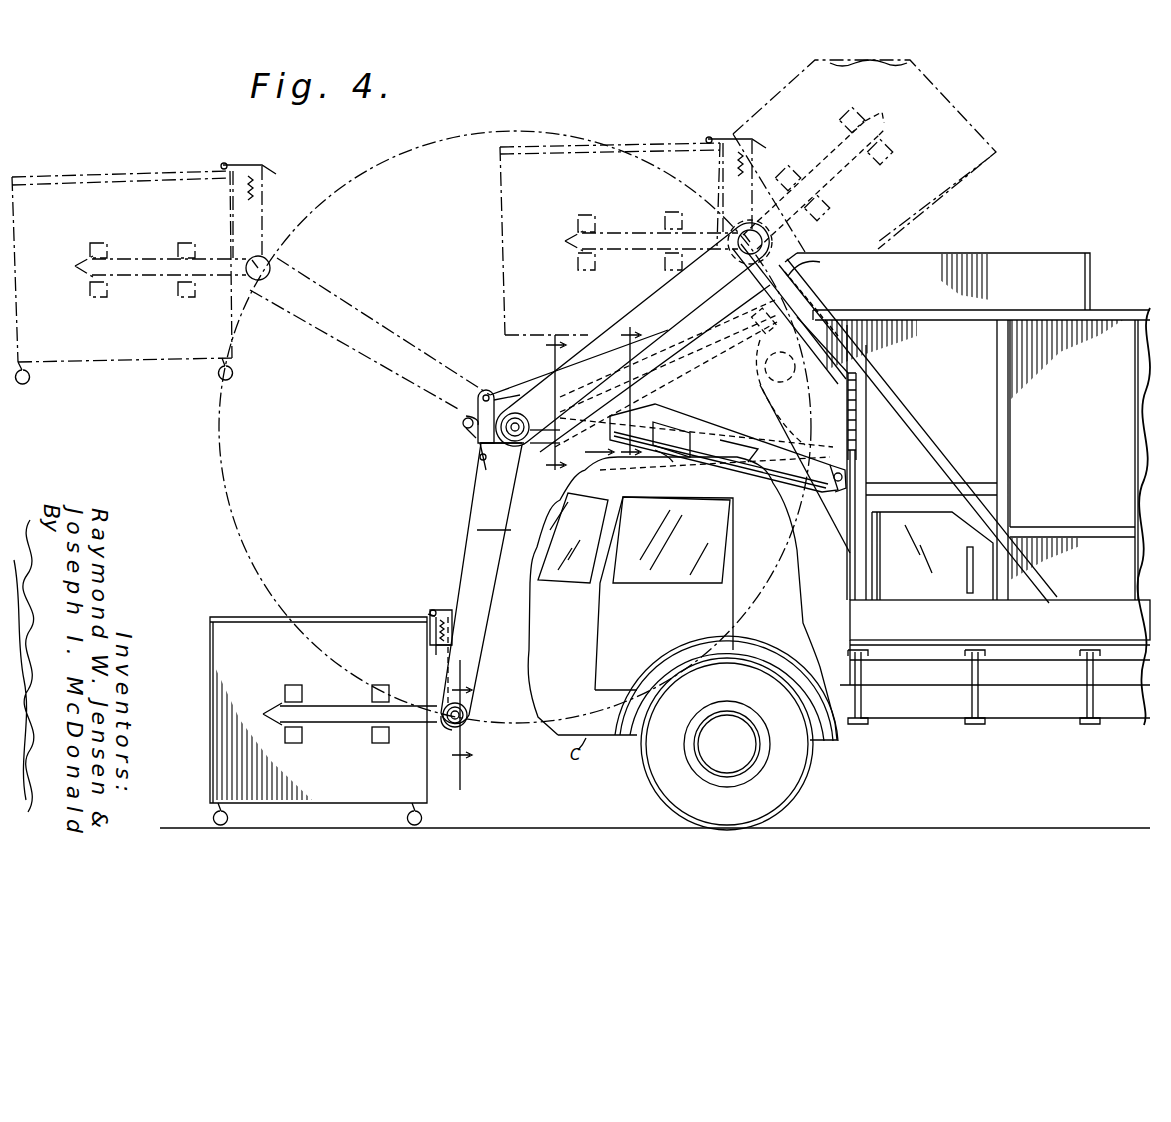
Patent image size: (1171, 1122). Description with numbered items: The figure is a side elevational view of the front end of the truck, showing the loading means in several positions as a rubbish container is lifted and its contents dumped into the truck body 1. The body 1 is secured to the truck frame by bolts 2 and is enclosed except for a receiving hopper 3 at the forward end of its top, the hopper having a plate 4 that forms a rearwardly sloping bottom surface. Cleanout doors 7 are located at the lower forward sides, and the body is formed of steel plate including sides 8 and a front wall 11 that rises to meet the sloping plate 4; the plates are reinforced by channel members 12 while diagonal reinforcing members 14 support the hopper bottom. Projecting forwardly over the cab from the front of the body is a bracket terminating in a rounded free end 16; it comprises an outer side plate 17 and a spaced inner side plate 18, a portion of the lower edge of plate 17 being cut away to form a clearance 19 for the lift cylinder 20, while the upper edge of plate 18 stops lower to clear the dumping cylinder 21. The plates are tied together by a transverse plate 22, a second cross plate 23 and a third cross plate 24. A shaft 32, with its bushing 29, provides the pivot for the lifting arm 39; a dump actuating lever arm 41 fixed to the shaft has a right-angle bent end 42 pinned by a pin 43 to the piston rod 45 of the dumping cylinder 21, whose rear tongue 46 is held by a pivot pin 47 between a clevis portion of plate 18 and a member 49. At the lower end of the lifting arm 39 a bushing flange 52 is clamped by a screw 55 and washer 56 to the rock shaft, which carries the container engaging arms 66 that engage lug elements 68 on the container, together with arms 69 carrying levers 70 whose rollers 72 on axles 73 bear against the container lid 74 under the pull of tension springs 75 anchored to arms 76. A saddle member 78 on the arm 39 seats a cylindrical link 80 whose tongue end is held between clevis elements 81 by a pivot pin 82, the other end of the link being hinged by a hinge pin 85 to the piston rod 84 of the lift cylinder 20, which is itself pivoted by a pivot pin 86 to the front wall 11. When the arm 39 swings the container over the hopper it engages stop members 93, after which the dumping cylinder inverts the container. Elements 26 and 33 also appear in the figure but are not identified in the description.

The body 1 is at (1110, 312).
The bolts 2 is at (864, 700).
The receiving hopper 3 is at (1027, 254).
The plate 4 is at (796, 355).
The cleanout doors 7 is at (948, 602).
The sides 8 is at (767, 555).
The front wall 11 is at (850, 590).
The channel members 12 is at (1122, 333).
The diagonally extending reinforcing members 14 is at (913, 434).
The free end 16 is at (704, 310).
The outer side plate 17 is at (796, 293).
The inner side plate 18 is at (832, 528).
The clearance 19 is at (718, 421).
The lift cylinder 20 is at (673, 421).
The dumping cylinder 21 is at (681, 316).
The transverse plate 22 is at (563, 407).
The second cross plate 23 is at (722, 362).
The third cross plate 24 is at (798, 430).
The section arrow 26 is at (599, 457).
The bushing 29 is at (558, 427).
The shaft 32 is at (668, 458).
The bushing 33 is at (558, 439).
The lifting arm 39 is at (476, 536).
The dump actuating lever arm 41 is at (480, 456).
The right-angle bent end 42 is at (468, 436).
The pin 43 is at (464, 426).
The piston rod 45 is at (606, 335).
The tongue portion 46 is at (757, 318).
The pivot pin 47 is at (783, 359).
The member 49 is at (808, 311).
The flange 52 is at (472, 712).
The screw 55 is at (470, 718).
The washer 56 is at (470, 727).
The container engaging arms 66 is at (348, 725).
The lug elements 68 is at (290, 685).
The arms 69 is at (455, 632).
The levers 70 is at (440, 610).
The rollers 72 is at (433, 612).
The axles 73 is at (430, 613).
The closed lid 74 is at (233, 617).
The tension springs 75 is at (438, 632).
The arms 76 is at (440, 648).
The saddle member 78 is at (468, 415).
The link 80 is at (478, 400).
The clevis elements 81 is at (478, 462).
The pivot pin 82 is at (478, 450).
The piston rod 84 is at (500, 396).
The hinge pin 85 is at (484, 392).
The pivot pin 86 is at (844, 472).
The stop members 93 is at (811, 267).